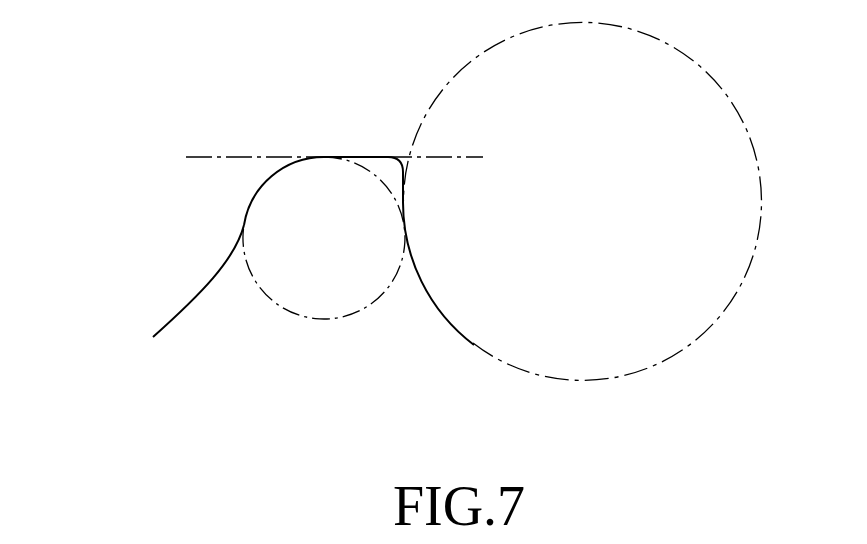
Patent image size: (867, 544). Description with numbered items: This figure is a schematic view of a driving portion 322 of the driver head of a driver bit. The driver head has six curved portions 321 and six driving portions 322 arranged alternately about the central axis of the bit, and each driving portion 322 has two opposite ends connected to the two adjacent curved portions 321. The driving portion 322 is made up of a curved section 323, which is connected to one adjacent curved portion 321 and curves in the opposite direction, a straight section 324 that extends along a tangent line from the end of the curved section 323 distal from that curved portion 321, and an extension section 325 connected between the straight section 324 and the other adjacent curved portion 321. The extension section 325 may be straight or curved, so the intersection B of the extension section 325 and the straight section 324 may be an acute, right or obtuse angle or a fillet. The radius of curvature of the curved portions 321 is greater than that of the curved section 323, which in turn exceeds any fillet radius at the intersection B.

The curved portion 321 is at (193, 303).
The driving portion 322 is at (366, 122).
The curved section 323 is at (268, 180).
The straight section 324 is at (353, 157).
The extension section 325 is at (404, 184).
The intersection B is at (390, 135).